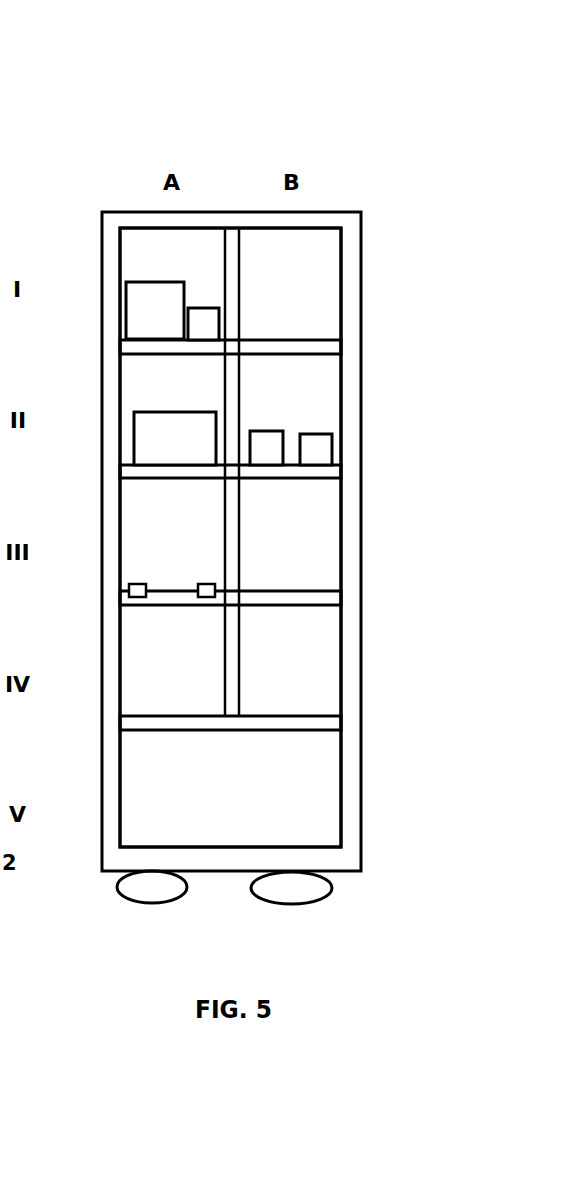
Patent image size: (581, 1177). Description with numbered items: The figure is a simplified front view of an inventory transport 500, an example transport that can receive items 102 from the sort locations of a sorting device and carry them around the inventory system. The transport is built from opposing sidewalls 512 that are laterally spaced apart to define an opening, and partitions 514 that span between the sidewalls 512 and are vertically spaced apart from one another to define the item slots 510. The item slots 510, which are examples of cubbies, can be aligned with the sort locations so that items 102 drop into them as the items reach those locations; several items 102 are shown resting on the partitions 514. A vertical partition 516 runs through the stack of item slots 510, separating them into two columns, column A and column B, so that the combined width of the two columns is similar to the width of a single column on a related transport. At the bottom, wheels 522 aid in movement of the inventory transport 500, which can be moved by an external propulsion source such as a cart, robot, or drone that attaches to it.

The inventory transport 500 is at (236, 483).
The sidewall 512 is at (113, 247).
The item slot 510 is at (328, 548).
The vertical partition 516 is at (233, 295).
The partition 514 is at (328, 722).
The item 102 is at (313, 443).
The wheel 522 is at (317, 884).